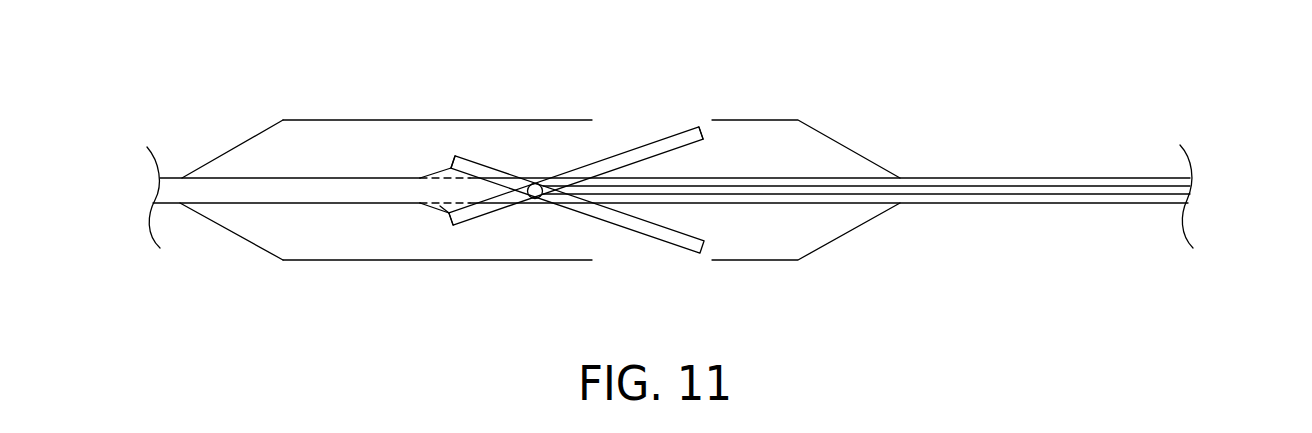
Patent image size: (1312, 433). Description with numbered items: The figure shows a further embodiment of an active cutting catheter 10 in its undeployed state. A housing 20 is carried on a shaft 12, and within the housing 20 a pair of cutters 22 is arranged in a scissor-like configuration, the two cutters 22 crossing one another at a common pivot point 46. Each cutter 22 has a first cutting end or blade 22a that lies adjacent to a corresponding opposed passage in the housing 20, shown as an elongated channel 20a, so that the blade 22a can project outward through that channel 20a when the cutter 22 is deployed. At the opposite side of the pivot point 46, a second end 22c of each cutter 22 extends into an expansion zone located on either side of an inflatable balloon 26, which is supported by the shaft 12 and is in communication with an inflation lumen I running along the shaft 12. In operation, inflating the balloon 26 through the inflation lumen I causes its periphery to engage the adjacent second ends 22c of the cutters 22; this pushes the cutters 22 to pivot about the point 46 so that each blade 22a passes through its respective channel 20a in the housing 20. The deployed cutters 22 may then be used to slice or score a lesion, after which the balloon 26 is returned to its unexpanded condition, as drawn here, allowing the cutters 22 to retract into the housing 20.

The active cutting catheter 10 is at (924, 78).
The shaft 12 is at (1037, 178).
The housing 20 is at (328, 119).
The elongated channels 20a is at (609, 119).
The cutters 22 is at (661, 126).
The cutting end or blade 22a is at (699, 126).
The second end 22c is at (473, 163).
The inflatable balloon 26 is at (446, 212).
The common pivot point 46 is at (536, 183).
The inflation lumen I is at (1208, 192).